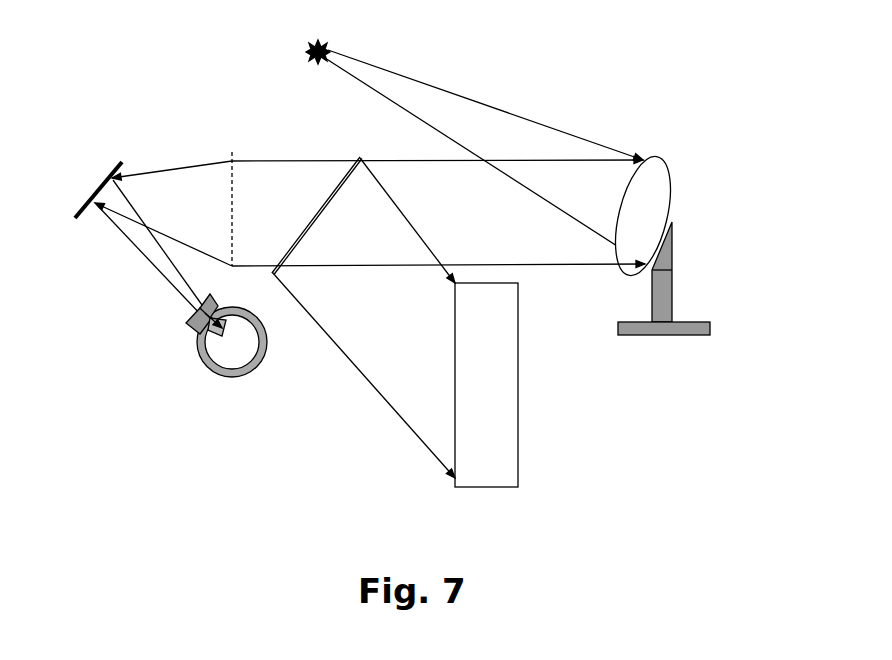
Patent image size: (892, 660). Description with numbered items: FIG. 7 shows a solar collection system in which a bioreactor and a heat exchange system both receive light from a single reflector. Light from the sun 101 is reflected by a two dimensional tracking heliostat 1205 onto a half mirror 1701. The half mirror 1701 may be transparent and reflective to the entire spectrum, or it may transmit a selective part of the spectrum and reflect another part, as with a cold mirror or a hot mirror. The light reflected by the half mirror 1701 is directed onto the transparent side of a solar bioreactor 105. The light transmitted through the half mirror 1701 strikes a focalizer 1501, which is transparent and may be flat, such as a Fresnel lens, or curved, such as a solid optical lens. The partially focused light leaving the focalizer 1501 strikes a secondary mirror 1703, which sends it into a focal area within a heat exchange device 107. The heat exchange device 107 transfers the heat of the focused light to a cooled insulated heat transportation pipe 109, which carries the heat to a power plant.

The sun 101 is at (310, 57).
The two dimensional tracking heliostat 1205 is at (652, 152).
The focalizer 1501 is at (240, 153).
The secondary mirror 1703 is at (102, 173).
The half mirror 1701 is at (335, 180).
The solar bioreactor 105 is at (522, 405).
The heat exchange device 107 is at (185, 322).
The cooled insulated heat transportation pipe 109 is at (213, 377).